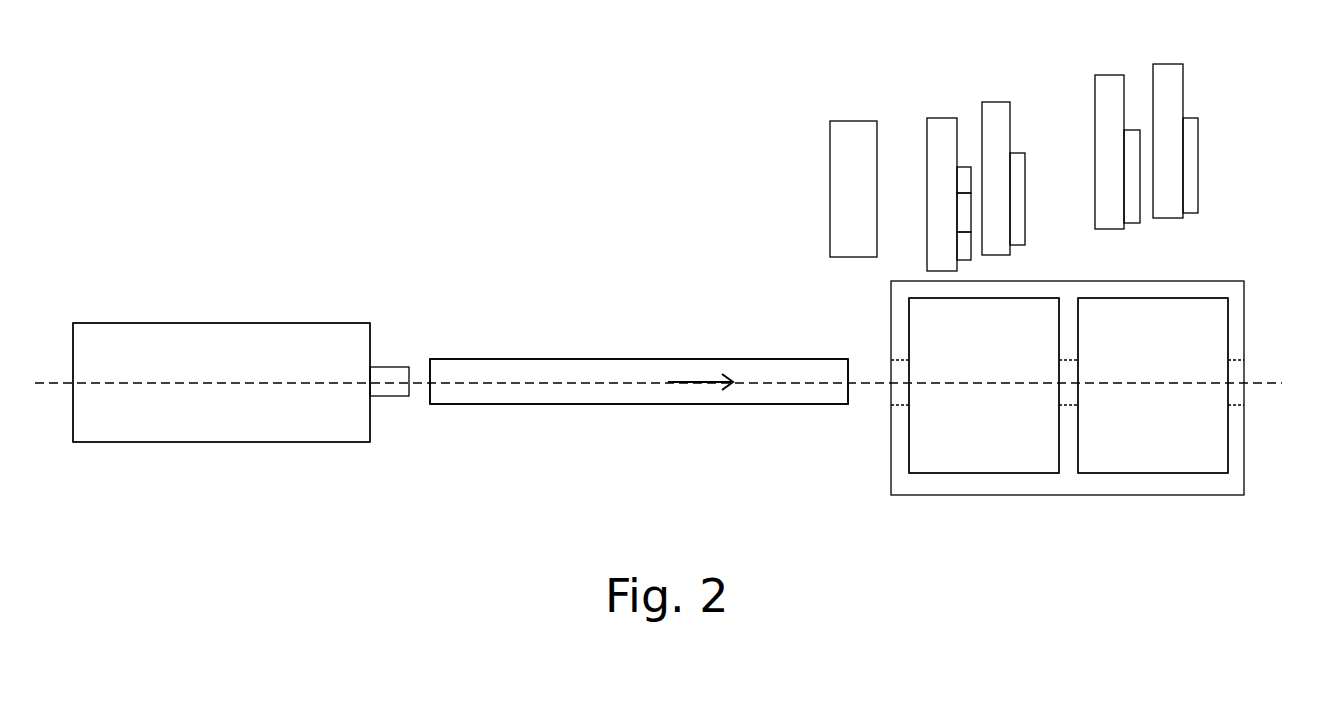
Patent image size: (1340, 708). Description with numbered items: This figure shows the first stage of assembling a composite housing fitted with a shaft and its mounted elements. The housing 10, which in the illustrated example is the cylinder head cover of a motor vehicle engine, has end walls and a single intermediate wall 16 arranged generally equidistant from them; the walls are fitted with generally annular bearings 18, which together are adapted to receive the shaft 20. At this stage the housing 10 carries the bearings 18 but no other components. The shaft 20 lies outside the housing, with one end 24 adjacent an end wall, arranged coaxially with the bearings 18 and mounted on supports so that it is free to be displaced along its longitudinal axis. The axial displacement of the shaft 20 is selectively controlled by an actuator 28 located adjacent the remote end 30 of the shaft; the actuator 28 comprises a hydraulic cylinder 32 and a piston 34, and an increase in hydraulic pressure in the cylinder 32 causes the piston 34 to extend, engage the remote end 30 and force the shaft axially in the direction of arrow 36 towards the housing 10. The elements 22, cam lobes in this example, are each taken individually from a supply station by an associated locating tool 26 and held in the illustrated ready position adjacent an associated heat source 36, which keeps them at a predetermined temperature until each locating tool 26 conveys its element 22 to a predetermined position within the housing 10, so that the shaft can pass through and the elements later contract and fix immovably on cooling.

The housing 10 is at (1246, 294).
The intermediate wall 16 is at (1057, 443).
The bearing 18 is at (900, 390).
The shaft 20 is at (672, 393).
The mounted element 22 is at (965, 170).
The end of the shaft 24 is at (848, 365).
The locating tool 26 is at (937, 183).
The actuator 28 is at (306, 446).
The remote end of the shaft 30 is at (430, 397).
The cylinder 32 is at (285, 336).
The piston 34 is at (388, 376).
The arrow / heat source 36 is at (706, 382).